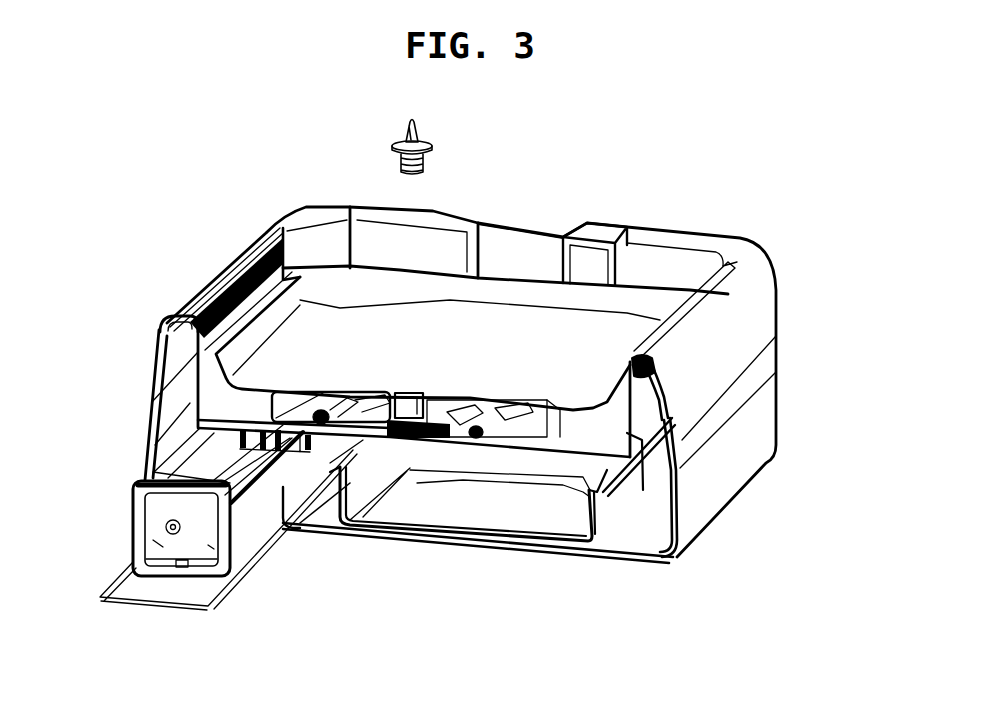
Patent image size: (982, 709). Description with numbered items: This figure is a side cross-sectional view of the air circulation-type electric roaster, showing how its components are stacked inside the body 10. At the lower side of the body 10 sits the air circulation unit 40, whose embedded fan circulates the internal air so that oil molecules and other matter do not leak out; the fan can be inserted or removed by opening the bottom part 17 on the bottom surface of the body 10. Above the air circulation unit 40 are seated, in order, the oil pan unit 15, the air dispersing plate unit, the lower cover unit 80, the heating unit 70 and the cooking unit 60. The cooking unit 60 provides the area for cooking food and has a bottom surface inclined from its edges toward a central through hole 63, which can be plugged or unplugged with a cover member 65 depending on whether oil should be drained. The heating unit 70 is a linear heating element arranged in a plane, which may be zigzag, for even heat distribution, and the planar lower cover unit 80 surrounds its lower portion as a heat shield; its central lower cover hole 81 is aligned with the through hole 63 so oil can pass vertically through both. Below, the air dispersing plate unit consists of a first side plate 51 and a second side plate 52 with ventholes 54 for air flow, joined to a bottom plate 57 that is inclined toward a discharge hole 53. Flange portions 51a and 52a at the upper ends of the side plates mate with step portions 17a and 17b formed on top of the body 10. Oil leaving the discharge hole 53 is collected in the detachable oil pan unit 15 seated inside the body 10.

The body 10 is at (733, 247).
The oil pan unit 15 is at (503, 520).
The bottom part 17 is at (213, 587).
The step portion 17a is at (180, 305).
The step portion 17b is at (660, 330).
The air circulation unit 40 is at (247, 520).
The first side plate 51 is at (270, 224).
The flange portion 51a is at (203, 290).
The second side plate 52 is at (650, 408).
The flange portion 52a is at (643, 363).
The discharge hole 53 is at (412, 176).
The ventholes 54 is at (240, 287).
The bottom plate 57 is at (147, 447).
The cooking unit 60 is at (500, 267).
The through hole 63 is at (417, 397).
The cover member 65 is at (420, 135).
The heating unit 70 is at (333, 390).
The lower cover unit 80 is at (173, 400).
The lower cover hole 81 is at (400, 394).